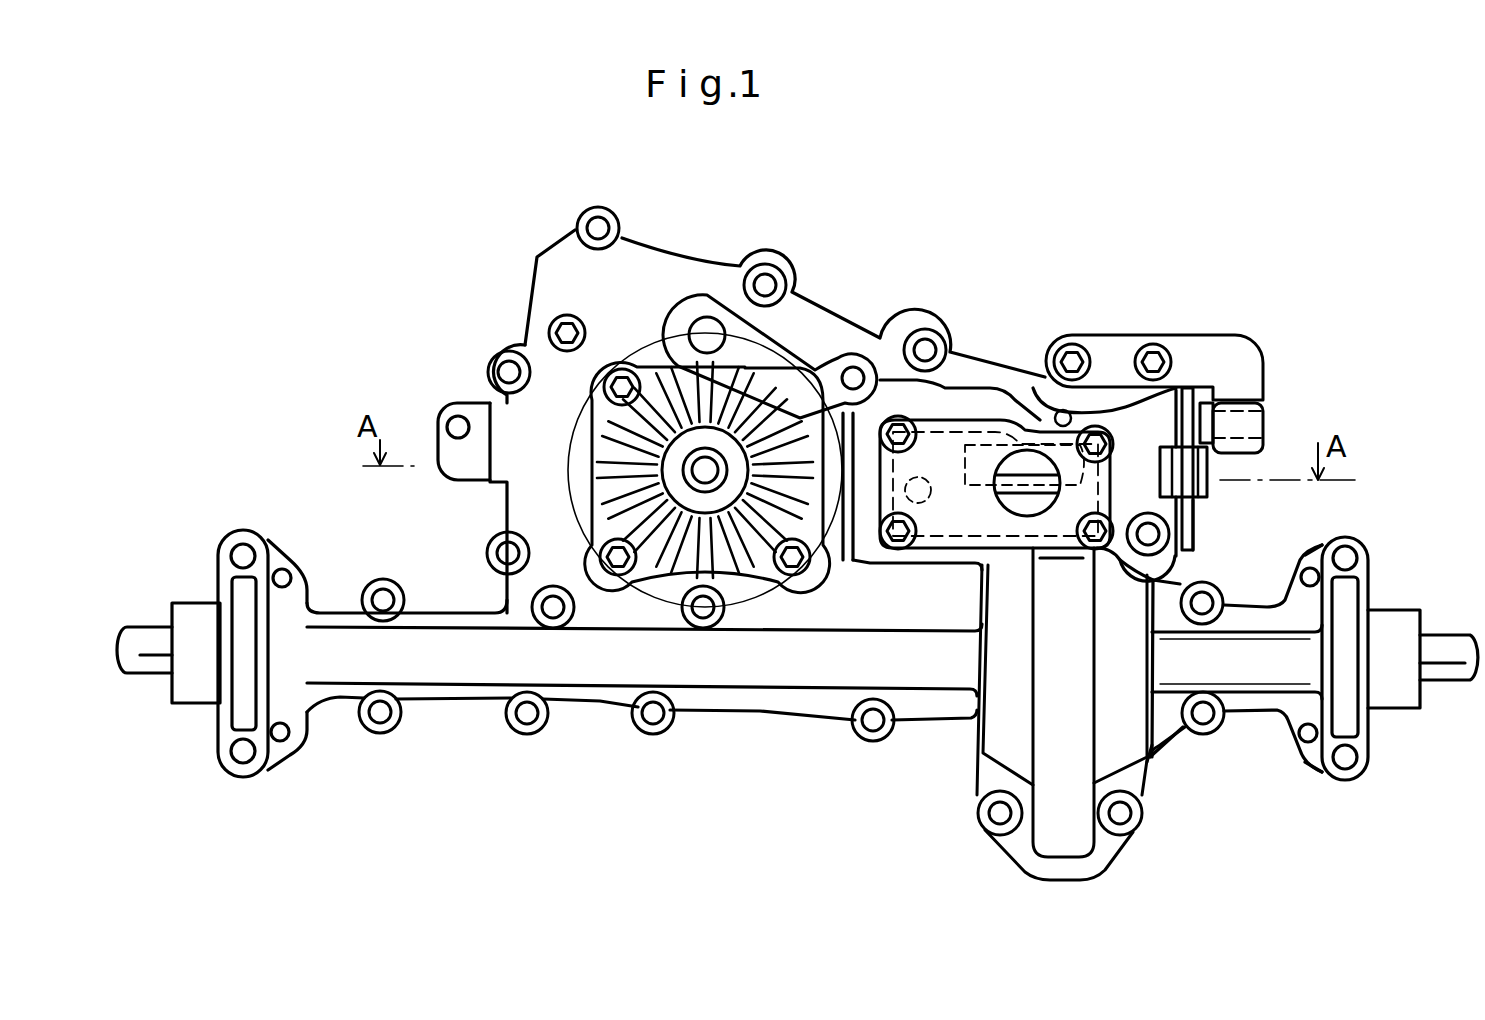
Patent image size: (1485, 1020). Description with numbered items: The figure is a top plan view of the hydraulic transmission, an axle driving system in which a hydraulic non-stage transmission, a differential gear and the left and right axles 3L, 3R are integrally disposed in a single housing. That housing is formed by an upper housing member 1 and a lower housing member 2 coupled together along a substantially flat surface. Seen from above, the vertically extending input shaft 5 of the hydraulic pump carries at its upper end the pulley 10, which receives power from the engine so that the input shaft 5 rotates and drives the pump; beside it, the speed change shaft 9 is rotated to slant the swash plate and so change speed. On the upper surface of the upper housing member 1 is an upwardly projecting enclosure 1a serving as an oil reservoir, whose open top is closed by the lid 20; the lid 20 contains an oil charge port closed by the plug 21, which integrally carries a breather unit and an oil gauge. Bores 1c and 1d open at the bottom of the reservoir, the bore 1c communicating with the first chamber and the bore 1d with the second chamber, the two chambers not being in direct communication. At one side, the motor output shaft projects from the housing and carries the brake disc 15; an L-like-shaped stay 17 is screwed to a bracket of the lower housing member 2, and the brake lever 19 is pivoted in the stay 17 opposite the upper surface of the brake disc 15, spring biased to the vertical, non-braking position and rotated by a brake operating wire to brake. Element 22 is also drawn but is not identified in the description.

The upper housing member 1 is at (530, 296).
The enclosure 1a is at (905, 420).
The bore 1c is at (924, 485).
The bore 1d is at (992, 445).
The lower housing member 2 is at (1096, 340).
The axle 3L is at (168, 628).
The axle 3R is at (1446, 633).
The input shaft 5 is at (699, 473).
The speed change shaft 9 is at (707, 333).
The pulley 10 is at (766, 585).
The brake disc 15 is at (1194, 532).
The stay 17 is at (1263, 380).
The brake lever 19 is at (1263, 418).
The lid 20 is at (937, 420).
The plug 21 is at (1100, 862).
The rib 22 is at (1150, 758).